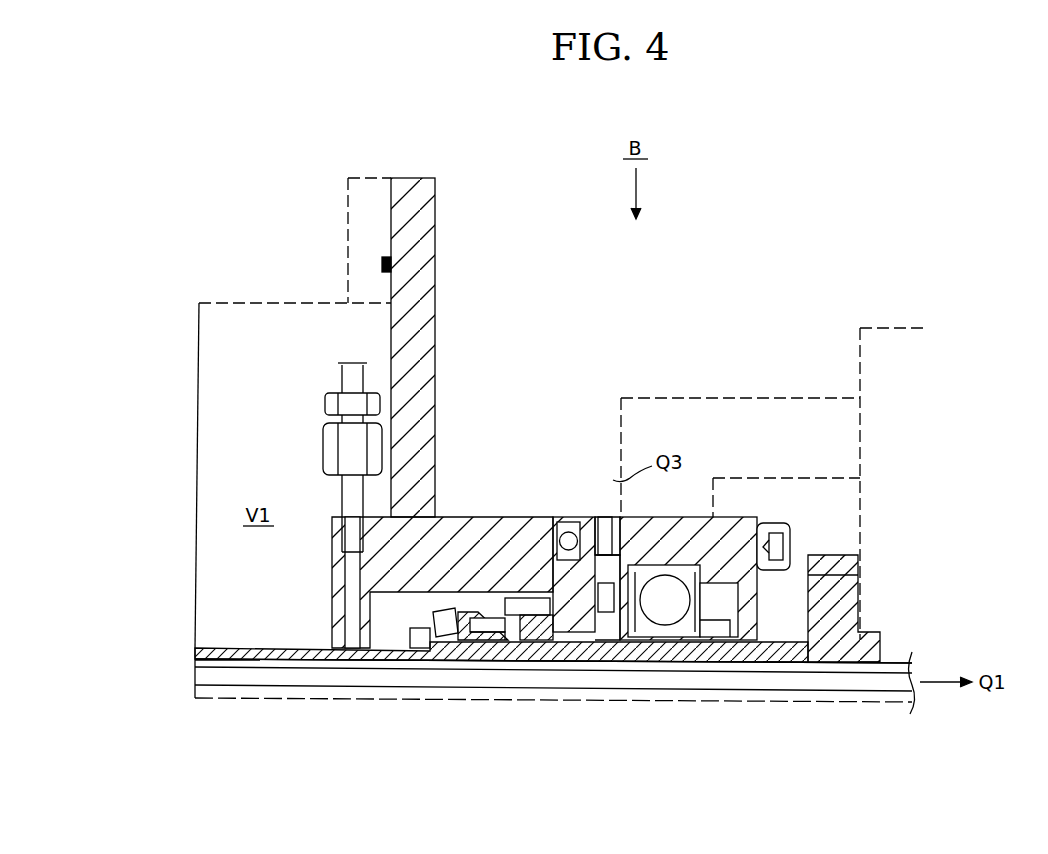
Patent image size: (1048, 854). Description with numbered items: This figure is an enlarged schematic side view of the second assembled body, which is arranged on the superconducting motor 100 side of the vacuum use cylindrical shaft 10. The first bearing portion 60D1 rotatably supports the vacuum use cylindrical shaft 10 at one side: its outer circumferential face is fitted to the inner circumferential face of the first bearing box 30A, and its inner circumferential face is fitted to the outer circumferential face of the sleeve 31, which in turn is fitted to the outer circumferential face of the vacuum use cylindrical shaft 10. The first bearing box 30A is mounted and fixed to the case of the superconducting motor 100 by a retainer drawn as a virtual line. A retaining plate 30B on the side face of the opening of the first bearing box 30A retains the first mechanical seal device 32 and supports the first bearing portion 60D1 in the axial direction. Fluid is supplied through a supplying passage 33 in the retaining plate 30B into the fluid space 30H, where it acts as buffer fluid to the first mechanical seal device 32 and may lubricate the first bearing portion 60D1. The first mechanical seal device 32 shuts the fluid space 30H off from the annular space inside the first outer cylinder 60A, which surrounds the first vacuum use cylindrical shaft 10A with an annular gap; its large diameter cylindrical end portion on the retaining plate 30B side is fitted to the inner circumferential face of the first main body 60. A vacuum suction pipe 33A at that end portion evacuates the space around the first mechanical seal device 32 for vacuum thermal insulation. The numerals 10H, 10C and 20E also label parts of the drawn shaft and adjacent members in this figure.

The vacuum use cylindrical shaft 10 is at (562, 657).
The first vacuum use cylindrical shaft 10A is at (553, 748).
The hole of base plate 10H is at (228, 690).
The edge portion of base plate 10C is at (866, 648).
The end block 20E is at (890, 655).
The first bearing box 30A is at (730, 517).
The retaining plate 30B is at (572, 510).
The fluid space 30H is at (612, 605).
The sleeve 31 is at (528, 655).
The first mechanical seal device 32 is at (485, 600).
The supplying passage 33 is at (603, 492).
The vacuum suction pipe 33A is at (337, 378).
The first main body 60 is at (415, 283).
The first outer cylinder 60A is at (337, 603).
The first bearing portion 60D1 is at (687, 517).
The superconducting motor 100 is at (903, 360).